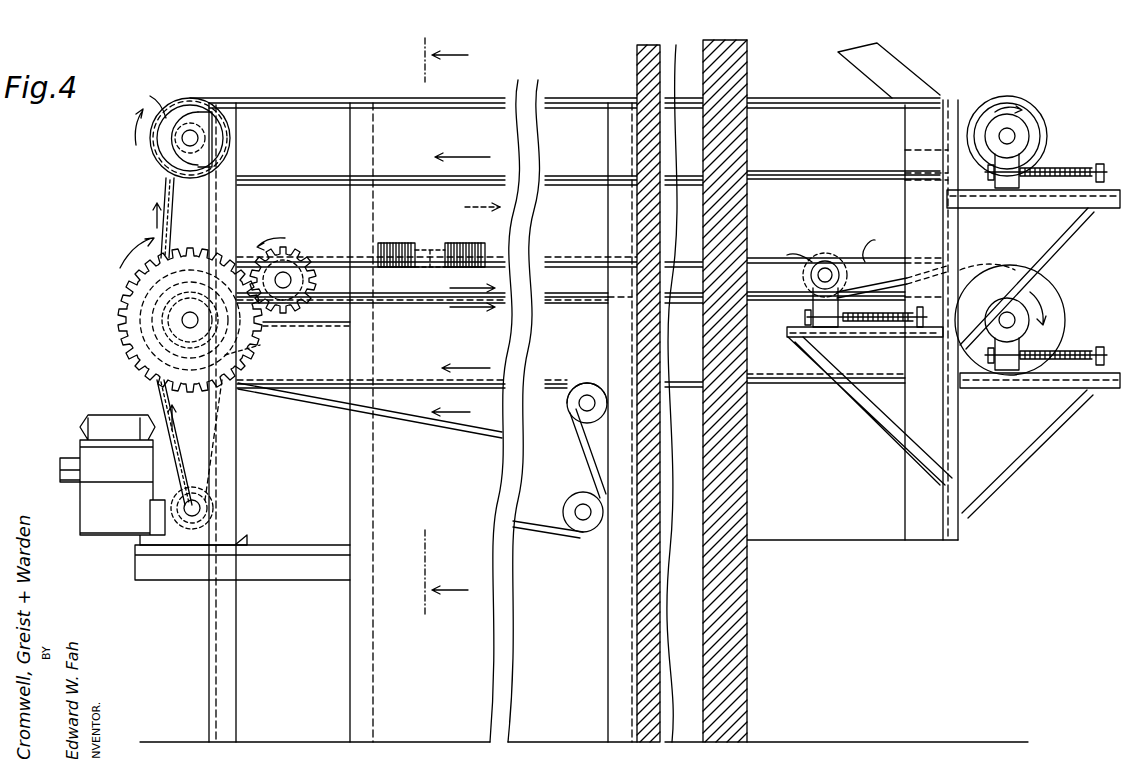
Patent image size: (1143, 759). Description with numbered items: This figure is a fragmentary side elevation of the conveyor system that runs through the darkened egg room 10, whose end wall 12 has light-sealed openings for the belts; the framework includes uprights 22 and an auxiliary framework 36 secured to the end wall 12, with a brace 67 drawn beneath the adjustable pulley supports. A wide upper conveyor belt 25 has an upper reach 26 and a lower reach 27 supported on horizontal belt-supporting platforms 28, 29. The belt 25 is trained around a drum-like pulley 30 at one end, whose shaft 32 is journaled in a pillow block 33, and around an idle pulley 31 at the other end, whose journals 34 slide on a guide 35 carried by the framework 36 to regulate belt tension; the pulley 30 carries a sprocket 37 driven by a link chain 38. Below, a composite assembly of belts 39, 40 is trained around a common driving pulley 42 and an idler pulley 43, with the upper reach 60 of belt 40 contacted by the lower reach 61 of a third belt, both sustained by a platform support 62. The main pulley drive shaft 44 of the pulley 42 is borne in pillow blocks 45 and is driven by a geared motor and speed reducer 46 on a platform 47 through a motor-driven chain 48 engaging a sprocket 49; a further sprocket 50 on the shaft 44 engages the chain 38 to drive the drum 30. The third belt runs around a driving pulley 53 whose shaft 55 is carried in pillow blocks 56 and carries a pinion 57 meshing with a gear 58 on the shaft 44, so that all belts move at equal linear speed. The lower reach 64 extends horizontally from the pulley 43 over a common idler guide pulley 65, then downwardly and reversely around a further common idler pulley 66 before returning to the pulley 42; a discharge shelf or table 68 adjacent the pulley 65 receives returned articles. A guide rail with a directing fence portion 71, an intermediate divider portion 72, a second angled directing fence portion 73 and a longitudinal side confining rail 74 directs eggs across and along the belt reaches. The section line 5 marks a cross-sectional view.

The section line 5- 5 is at (449, 325).
The darkened egg room 10 is at (747, 677).
The end wall 12 is at (655, 598).
The uprights 22 is at (362, 648).
The upper conveyor belt 25 is at (172, 96).
The upper reach 26 is at (322, 97).
The lower reach 27 is at (553, 180).
The belt-supporting platform 28 is at (535, 98).
The belt-supporting platform 29 is at (449, 187).
The drum-like pulley 30 is at (145, 96).
The idle pulley 31 is at (990, 113).
The shaft 32 is at (183, 138).
The pillow block 33 is at (205, 148).
The journals 34 is at (1012, 164).
The guide 35 is at (1094, 177).
The auxiliary framework 36 is at (1032, 208).
The sprocket 37 is at (188, 168).
The link chain 38 is at (163, 196).
The flexible endless belt 39 is at (968, 262).
The flexible endless belt 40 is at (468, 436).
The common driving pulley 42 is at (118, 322).
The idler pulley 43 is at (1040, 283).
The main pulley drive shaft 44 is at (185, 318).
The pillow blocks 45 is at (150, 378).
The geared motor and speed reducer 46 is at (142, 525).
The platform 47 is at (292, 572).
The motor-driven chain 48 is at (166, 437).
The sprocket 49 is at (148, 326).
The sprocket 50 is at (192, 285).
The driving pulley 53 is at (285, 252).
The shaft 55 is at (287, 278).
The pillow blocks 56 is at (337, 278).
The pinion 57 is at (292, 318).
The gear 58 is at (248, 350).
The upper reach 60 is at (552, 301).
The lower reach 61 is at (600, 292).
The platform support 62 is at (592, 303).
The lower reach 64 is at (690, 387).
The common idler guide pulley 65 is at (574, 428).
The common idler pulley 66 is at (573, 503).
The diagonal brace 67 is at (838, 392).
The discharge shelf or table 68 is at (552, 386).
The directing fence portion 71 is at (398, 248).
The intermediate divider portion 72 is at (421, 256).
The second angled directing fence portion 73 is at (460, 248).
The longitudinal side confining rail 74 is at (571, 250).